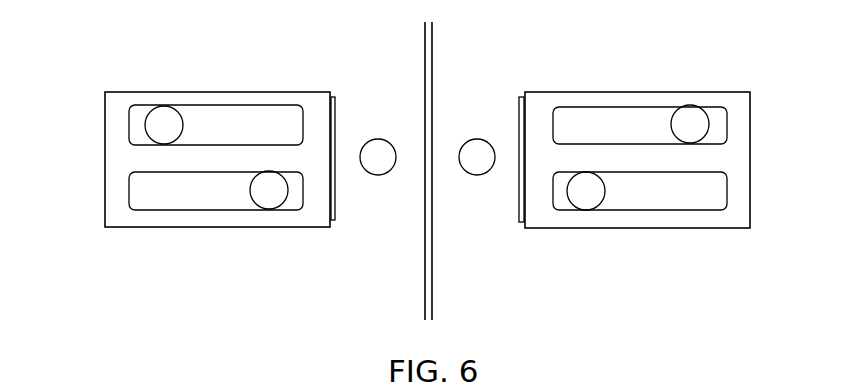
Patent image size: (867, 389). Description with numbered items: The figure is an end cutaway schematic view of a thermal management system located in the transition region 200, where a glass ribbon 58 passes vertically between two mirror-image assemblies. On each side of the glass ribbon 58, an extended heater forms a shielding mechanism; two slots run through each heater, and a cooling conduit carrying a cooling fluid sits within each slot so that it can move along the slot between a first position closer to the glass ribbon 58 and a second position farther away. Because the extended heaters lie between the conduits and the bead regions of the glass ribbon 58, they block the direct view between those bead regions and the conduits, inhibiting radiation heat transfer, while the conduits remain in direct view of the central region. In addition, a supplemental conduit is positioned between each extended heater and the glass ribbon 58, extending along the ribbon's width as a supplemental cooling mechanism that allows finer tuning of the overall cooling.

The glass ribbon 58 is at (432, 95).
The transition region 200 is at (503, 58).